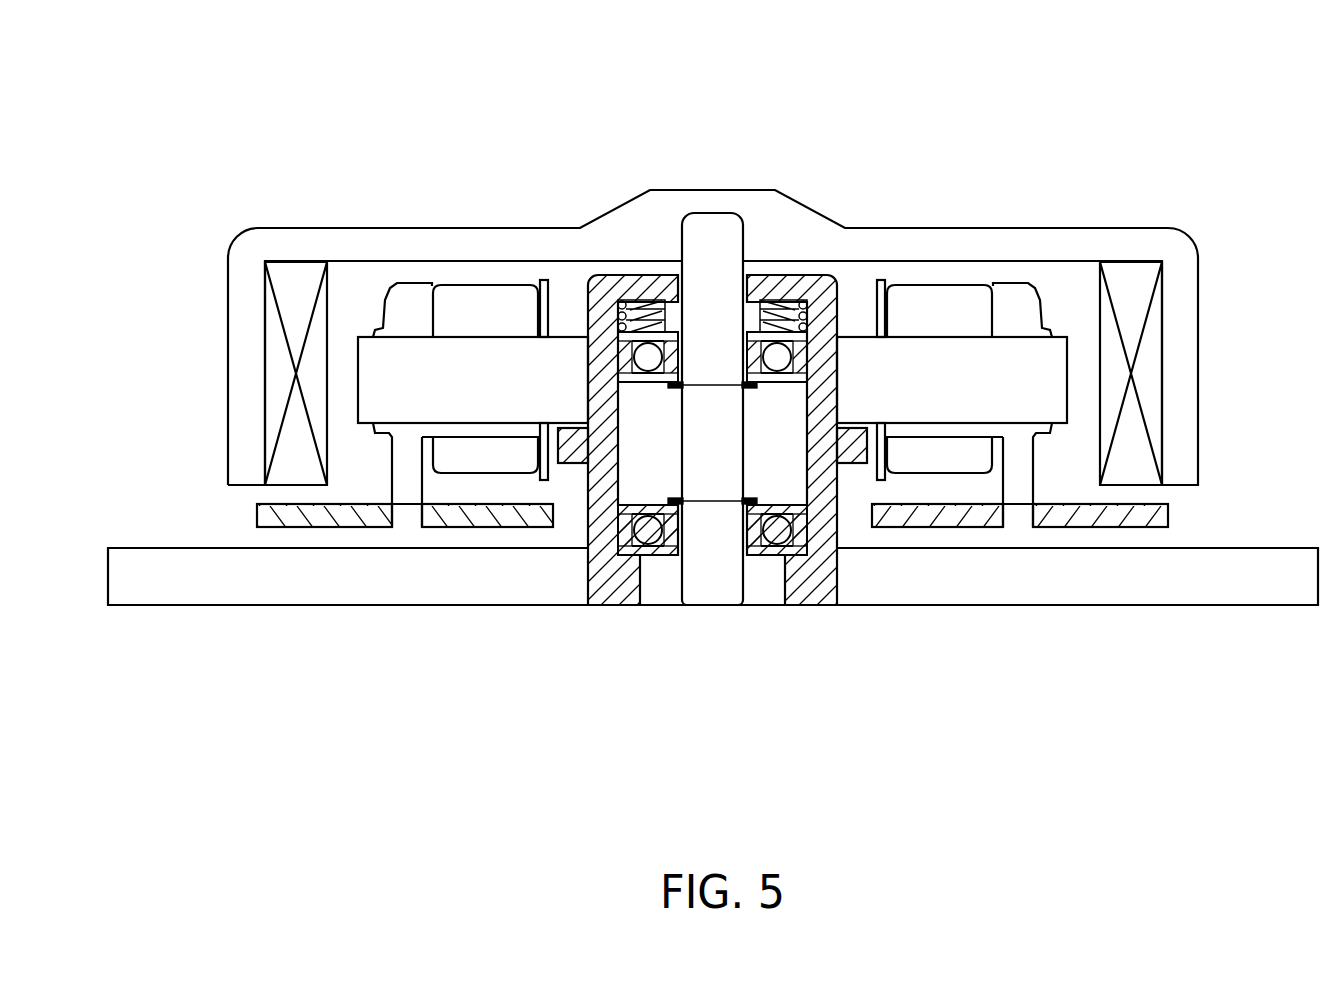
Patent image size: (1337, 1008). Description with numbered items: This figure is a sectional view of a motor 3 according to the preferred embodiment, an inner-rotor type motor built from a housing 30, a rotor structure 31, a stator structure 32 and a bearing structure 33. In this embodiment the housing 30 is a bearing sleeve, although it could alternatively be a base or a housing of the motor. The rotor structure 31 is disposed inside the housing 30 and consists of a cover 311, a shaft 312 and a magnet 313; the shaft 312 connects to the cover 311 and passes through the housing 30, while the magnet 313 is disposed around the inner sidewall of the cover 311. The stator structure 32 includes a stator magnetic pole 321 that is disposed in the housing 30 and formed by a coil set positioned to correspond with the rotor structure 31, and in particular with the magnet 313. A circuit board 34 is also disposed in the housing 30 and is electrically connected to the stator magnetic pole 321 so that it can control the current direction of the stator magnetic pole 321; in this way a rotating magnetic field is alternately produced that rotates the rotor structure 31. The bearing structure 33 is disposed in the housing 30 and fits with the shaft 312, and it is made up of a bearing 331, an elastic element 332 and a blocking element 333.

The motor 3 is at (273, 107).
The housing 30 is at (605, 597).
The rotor structure 31 is at (568, 82).
The cover 311 is at (613, 210).
The shaft 312 is at (710, 225).
The magnet 313 is at (318, 278).
The stator structure 32 is at (731, 489).
The stator magnetic pole 321 is at (942, 455).
The bearing structure 33 is at (857, 707).
The bearing 331 is at (769, 384).
The elastic element 332 is at (785, 336).
The blocking element 333 is at (793, 292).
The circuit board 34 is at (1160, 510).